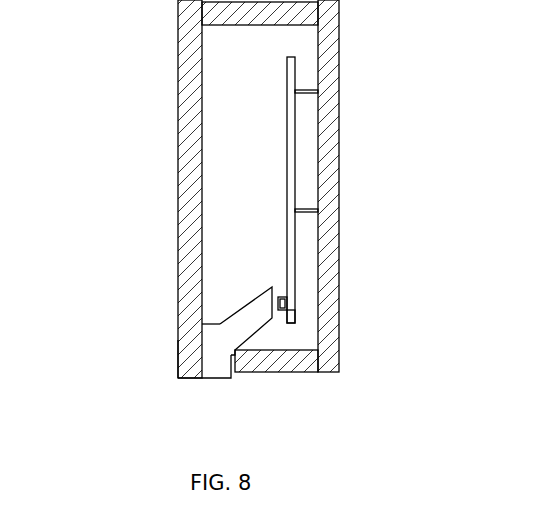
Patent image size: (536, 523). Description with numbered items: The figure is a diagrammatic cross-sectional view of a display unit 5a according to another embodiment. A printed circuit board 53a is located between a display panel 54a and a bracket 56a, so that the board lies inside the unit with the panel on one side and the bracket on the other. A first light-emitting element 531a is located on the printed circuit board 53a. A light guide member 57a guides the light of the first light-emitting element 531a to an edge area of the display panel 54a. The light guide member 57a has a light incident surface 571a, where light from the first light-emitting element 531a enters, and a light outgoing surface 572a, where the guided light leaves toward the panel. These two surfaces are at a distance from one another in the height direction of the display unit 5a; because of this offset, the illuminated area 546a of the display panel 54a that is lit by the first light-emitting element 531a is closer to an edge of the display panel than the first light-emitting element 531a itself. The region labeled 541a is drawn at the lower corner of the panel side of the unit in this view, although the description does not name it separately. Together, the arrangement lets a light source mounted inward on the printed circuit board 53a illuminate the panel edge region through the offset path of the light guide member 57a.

The display unit 5a is at (151, 62).
The display panel 54a is at (178, 115).
The bracket 56a is at (328, 65).
The printed circuit board 53a is at (291, 159).
The light incident surface 571a is at (281, 297).
The first light-emitting element 531a is at (295, 305).
The light guide member 57a is at (243, 331).
The light outgoing surface 572a is at (202, 350).
The illuminated area 546a is at (178, 358).
The bottom edge 541a is at (178, 378).